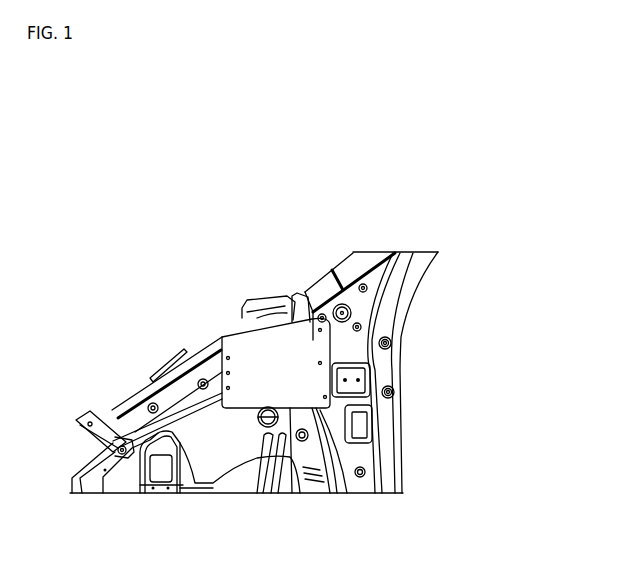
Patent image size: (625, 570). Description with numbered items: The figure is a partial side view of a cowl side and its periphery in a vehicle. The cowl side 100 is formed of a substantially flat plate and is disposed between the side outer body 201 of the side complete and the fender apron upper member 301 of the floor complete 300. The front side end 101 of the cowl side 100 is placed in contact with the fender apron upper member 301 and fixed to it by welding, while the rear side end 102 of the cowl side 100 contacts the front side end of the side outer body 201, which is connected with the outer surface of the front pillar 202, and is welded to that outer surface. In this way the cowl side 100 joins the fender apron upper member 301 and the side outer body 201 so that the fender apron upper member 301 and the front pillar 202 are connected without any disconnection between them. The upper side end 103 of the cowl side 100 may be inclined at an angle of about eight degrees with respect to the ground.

The cowl side 100 is at (235, 322).
The front side end 101 is at (221, 373).
The rear side end 102 is at (330, 338).
The upper side end 103 is at (270, 297).
The side outer body 201 is at (410, 366).
The front pillar 202 is at (360, 262).
The floor complete 300 is at (151, 496).
The fender apron upper member 301 is at (170, 420).